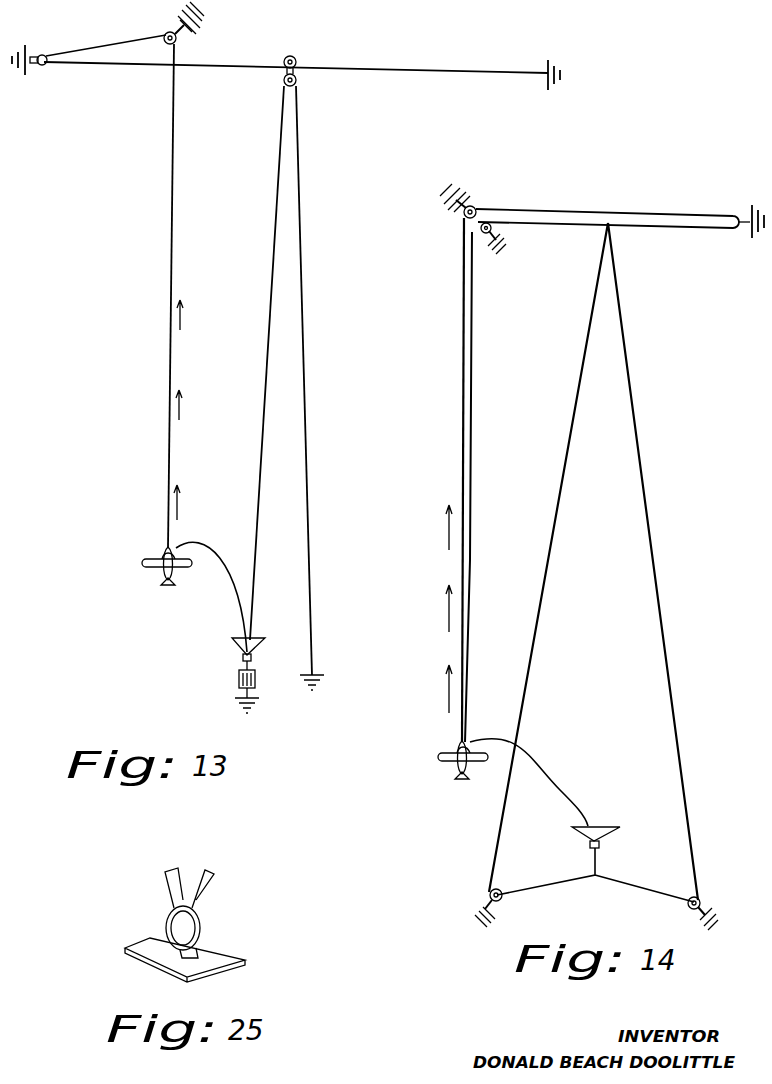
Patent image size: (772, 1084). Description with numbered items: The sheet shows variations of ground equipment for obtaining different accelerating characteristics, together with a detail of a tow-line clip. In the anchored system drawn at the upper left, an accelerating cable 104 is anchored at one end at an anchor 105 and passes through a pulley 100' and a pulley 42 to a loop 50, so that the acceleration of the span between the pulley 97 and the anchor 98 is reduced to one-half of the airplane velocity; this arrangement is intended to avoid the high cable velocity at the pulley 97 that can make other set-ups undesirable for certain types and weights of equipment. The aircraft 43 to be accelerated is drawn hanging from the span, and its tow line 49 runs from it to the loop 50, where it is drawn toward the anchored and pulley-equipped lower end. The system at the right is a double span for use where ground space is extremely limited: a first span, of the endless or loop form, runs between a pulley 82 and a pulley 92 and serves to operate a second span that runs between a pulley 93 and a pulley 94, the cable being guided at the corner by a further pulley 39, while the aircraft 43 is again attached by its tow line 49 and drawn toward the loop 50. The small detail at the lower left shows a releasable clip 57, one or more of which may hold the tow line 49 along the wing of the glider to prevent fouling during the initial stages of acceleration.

In FIG. 13, the pulley 97 is at (46, 56).
In FIG. 13, the anchor 98 is at (548, 68).
In FIG. 13, the pulley 100' is at (267, 54).
In FIG. 13, the accelerating cable 104 is at (306, 322).
In FIG. 13, the toy airplane 43 is at (145, 563).
In FIG. 14, the toy airplane 43 is at (446, 760).
In FIG. 13, the tow line 49 is at (228, 586).
In FIG. 13, the loop 50 is at (250, 636).
In FIG. 14, the loop 50 is at (602, 826).
In FIG. 13, the pulley 42 is at (255, 679).
In FIG. 13, the anchor 105 is at (315, 675).
In FIG. 14, the corner pulley 39 is at (474, 206).
In FIG. 14, the pulley 93 is at (490, 228).
In FIG. 14, the pulley 94 is at (748, 224).
In FIG. 14, the pulley 82 is at (490, 894).
In FIG. 14, the pulley 92 is at (700, 900).
In FIG. 25, the releasable clip 57 is at (205, 903).